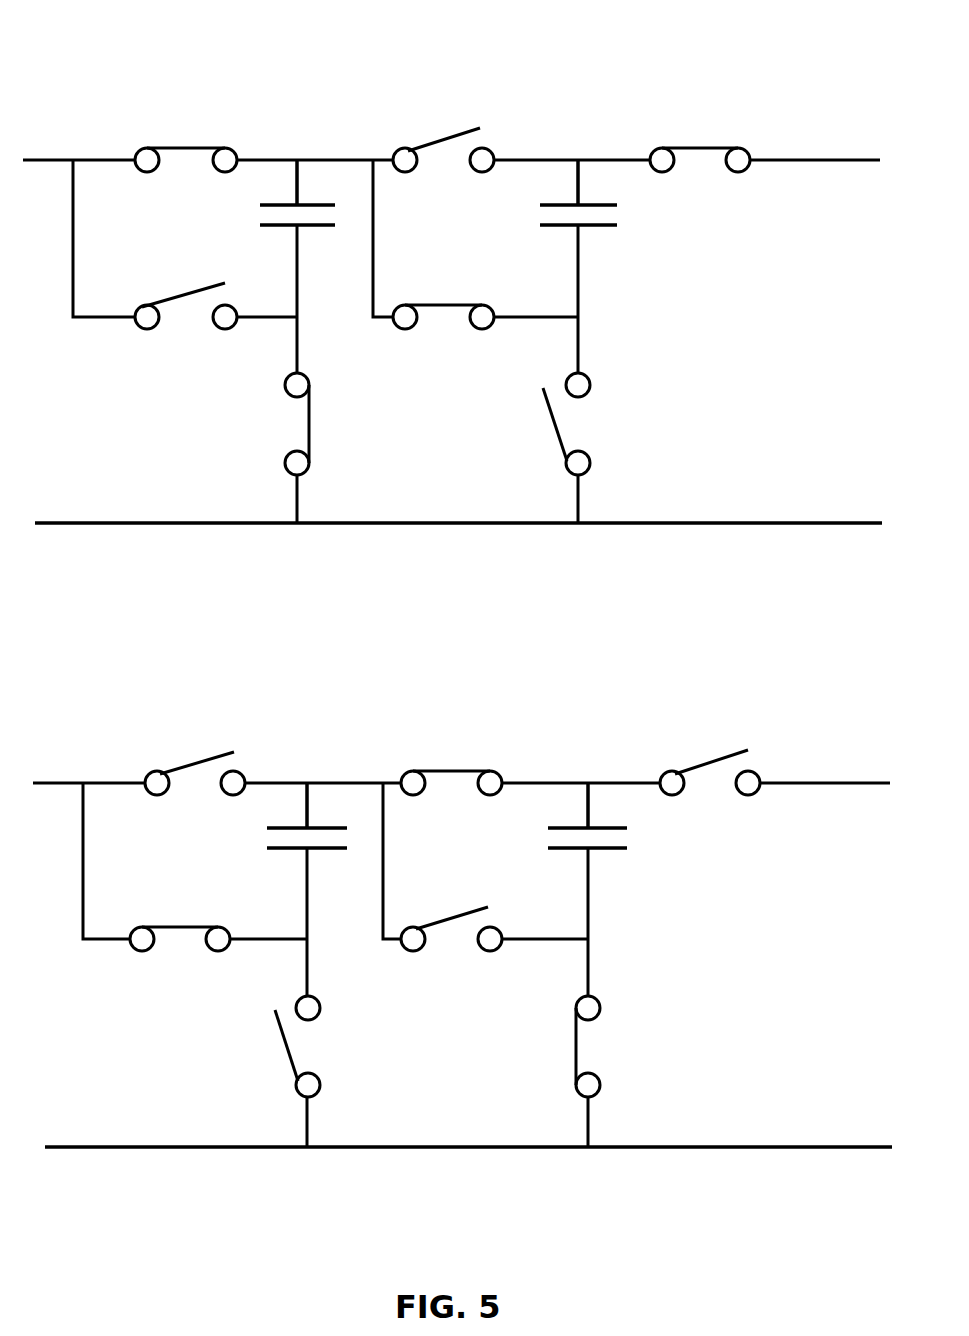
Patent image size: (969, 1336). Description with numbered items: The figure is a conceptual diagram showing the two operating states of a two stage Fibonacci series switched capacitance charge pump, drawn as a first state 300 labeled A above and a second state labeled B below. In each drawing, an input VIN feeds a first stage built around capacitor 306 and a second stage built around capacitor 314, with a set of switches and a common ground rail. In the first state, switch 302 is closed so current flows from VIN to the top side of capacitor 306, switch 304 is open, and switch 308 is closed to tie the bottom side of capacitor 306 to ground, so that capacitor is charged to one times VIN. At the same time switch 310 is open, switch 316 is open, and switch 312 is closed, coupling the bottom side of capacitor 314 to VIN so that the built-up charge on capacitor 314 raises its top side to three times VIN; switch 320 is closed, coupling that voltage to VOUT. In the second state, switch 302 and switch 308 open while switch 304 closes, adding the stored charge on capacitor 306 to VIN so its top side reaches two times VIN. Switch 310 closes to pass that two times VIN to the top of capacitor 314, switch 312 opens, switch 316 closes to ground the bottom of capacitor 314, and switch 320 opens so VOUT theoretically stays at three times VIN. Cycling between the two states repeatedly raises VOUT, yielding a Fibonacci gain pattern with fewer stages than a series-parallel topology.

The state 300 is at (650, 60).
The switch 302 is at (167, 146).
The switch 304 is at (190, 286).
The capacitor 306 is at (302, 228).
The switch 308 is at (312, 422).
The switch 310 is at (455, 123).
The switch 312 is at (455, 298).
The capacitor 314 is at (588, 228).
The switch 316 is at (562, 437).
The switch 320 is at (672, 150).